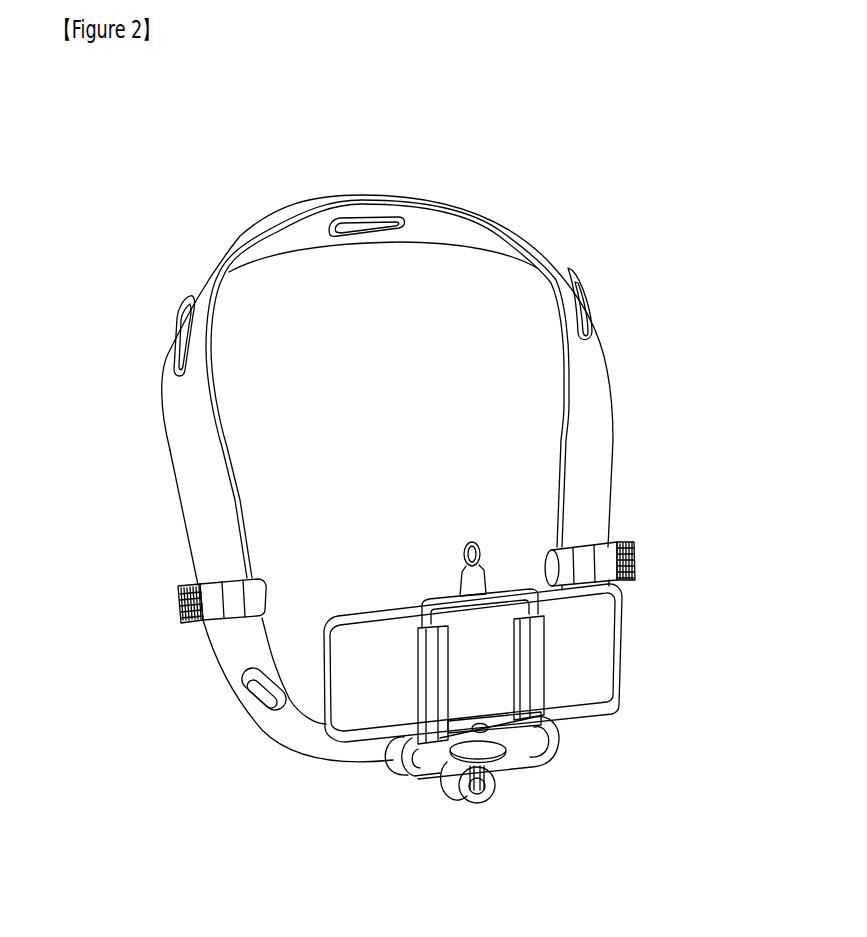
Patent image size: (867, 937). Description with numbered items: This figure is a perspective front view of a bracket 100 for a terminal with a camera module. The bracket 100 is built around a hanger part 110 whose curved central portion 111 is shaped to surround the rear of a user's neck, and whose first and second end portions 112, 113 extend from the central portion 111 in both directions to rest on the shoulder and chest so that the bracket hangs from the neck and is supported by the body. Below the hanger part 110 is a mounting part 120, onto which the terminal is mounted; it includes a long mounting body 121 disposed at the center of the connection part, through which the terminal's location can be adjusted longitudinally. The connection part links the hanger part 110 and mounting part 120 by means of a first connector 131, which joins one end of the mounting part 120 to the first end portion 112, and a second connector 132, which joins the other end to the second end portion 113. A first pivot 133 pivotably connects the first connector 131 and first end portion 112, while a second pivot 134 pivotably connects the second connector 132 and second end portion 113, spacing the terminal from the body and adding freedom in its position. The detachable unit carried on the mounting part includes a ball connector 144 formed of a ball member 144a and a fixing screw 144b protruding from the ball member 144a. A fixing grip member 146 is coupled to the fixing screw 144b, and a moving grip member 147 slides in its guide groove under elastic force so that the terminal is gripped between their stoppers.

The bracket for a terminal 100 is at (577, 184).
The hanger part 110 is at (177, 295).
The central portion 111 is at (362, 196).
The first end portion 112 is at (172, 483).
The second end portion 113 is at (612, 476).
The mounting part 120 is at (553, 765).
The mounting body 121 is at (410, 779).
The first connector 131 is at (233, 692).
The second connector 132 is at (618, 713).
The first pivot 133 is at (178, 605).
The second pivot 134 is at (637, 558).
The ball connector 144 is at (523, 883).
The ball member 144a is at (477, 795).
The fixing screw 144b is at (490, 786).
The fixing grip member 146 is at (418, 662).
The moving grip member 147 is at (442, 598).